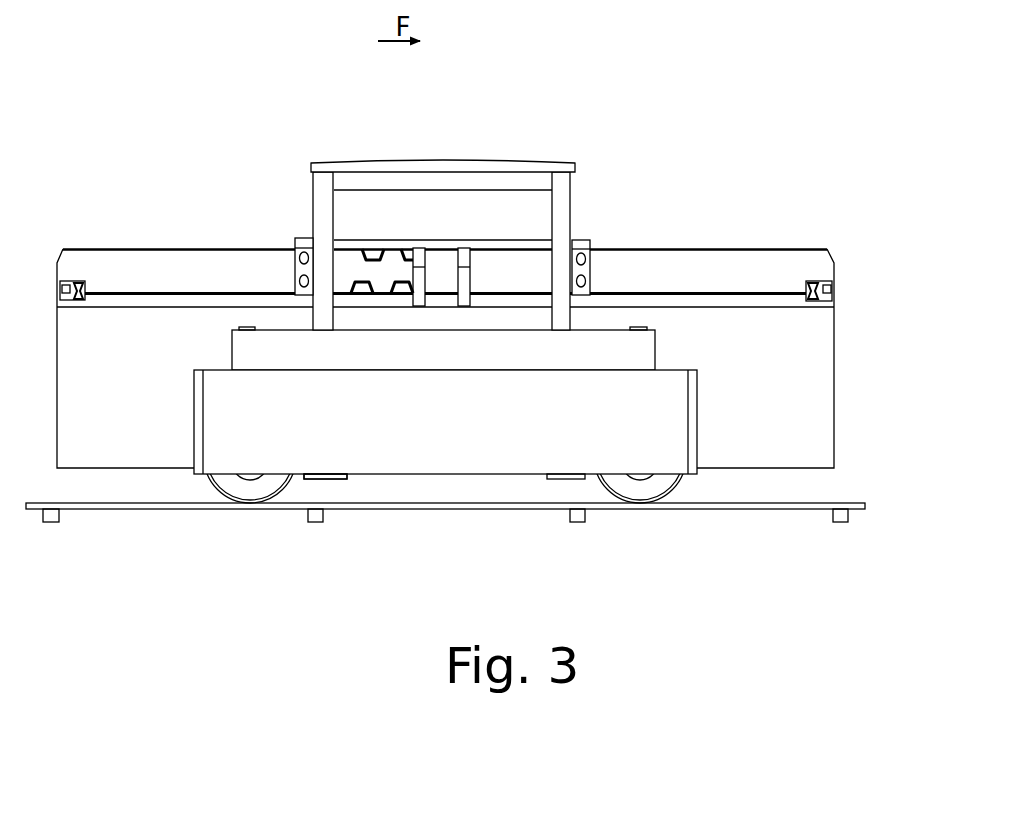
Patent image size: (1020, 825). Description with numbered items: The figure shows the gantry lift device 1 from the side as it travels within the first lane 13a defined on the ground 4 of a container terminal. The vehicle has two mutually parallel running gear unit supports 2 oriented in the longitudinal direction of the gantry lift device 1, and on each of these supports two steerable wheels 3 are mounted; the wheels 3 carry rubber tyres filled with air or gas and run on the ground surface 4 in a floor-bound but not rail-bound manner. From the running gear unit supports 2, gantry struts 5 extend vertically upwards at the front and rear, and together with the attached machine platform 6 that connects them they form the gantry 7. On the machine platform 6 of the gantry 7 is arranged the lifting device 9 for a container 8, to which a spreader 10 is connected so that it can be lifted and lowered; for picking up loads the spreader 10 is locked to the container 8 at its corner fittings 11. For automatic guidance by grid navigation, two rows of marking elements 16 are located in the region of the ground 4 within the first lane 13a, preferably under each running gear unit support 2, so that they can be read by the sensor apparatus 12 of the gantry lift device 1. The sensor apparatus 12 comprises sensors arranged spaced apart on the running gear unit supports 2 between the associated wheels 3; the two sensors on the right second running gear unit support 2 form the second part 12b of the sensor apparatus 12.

The gantry lift device 1 is at (142, 128).
The running gear unit support 2 is at (195, 424).
The wheel 3 is at (225, 490).
The ground surface 4 is at (433, 516).
The gantry strut 5 is at (312, 216).
The machine platform 6 is at (445, 186).
The gantry 7 is at (353, 153).
The container 8 is at (127, 410).
The lifting device 9 is at (293, 228).
The spreader 10 is at (684, 243).
The corner fitting 11 is at (842, 300).
The sensor apparatus 12 is at (332, 485).
The second part of the sensor apparatus 12b is at (325, 476).
The first lane 13a is at (688, 518).
The marking element 16 is at (313, 528).